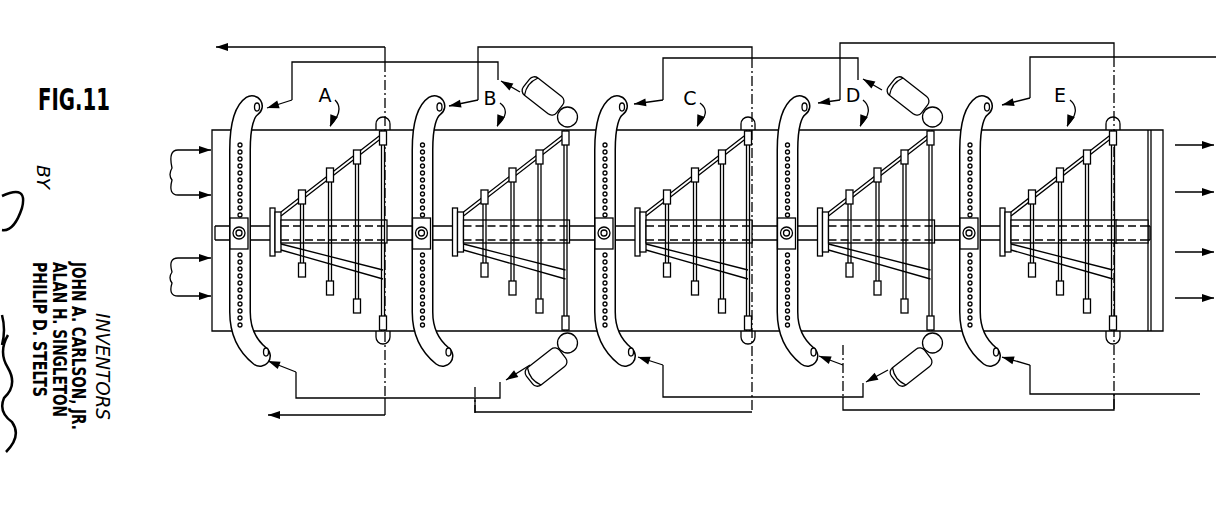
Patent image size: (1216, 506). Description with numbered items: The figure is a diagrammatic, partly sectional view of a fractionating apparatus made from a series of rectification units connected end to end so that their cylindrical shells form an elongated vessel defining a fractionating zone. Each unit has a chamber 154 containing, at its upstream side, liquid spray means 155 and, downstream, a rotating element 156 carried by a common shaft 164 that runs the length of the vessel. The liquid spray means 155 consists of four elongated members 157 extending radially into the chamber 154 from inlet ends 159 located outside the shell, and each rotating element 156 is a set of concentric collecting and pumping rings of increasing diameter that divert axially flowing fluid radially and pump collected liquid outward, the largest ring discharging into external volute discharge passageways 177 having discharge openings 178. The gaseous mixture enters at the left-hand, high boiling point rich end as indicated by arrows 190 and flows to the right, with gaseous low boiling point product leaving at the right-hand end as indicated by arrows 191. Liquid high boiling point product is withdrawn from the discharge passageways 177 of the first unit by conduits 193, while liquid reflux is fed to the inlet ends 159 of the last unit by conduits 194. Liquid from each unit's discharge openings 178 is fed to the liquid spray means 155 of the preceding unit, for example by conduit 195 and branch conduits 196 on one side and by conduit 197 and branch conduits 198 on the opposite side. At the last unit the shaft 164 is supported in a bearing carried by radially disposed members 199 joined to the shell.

The chamber 154 is at (317, 148).
The liquid spray means 155 is at (251, 178).
The rotating element 156 is at (322, 270).
The elongated members 157 is at (231, 140).
The inlet end 159 is at (259, 103).
The shaft 164 is at (258, 226).
The discharge passageways 177 is at (380, 115).
The discharge openings 178 is at (541, 92).
The arrows 190 is at (180, 223).
The arrows 191 is at (1190, 147).
The conduits 193 is at (330, 47).
The conduits 194 is at (1180, 57).
The conduit 195 is at (432, 62).
The branch conduits 196 is at (840, 80).
The conduit 197 is at (430, 412).
The branch conduits 198 is at (296, 374).
The radially disposed members 199 is at (1158, 135).